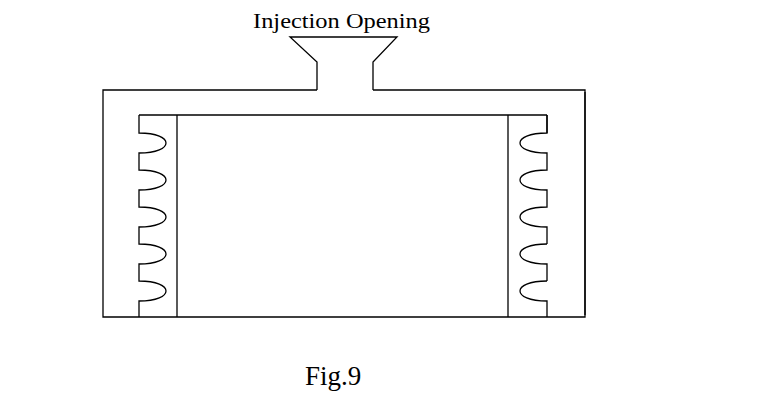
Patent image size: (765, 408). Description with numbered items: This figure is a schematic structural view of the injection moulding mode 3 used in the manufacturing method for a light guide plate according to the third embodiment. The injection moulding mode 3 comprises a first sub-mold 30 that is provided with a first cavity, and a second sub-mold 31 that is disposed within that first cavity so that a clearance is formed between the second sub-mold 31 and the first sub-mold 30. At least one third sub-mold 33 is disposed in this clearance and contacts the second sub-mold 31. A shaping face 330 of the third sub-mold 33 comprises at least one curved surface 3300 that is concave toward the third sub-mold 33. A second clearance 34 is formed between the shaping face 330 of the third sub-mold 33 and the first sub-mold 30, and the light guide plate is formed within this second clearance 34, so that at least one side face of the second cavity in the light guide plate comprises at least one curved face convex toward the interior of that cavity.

The injection moulding mode 3 is at (76, 68).
The first sub-mold 30 is at (437, 90).
The second sub-mold 31 is at (478, 115).
The second clearance 34 is at (557, 106).
The third sub-mold 33 is at (527, 163).
The shaping face 330 is at (547, 238).
The curved surface 3300 is at (523, 297).